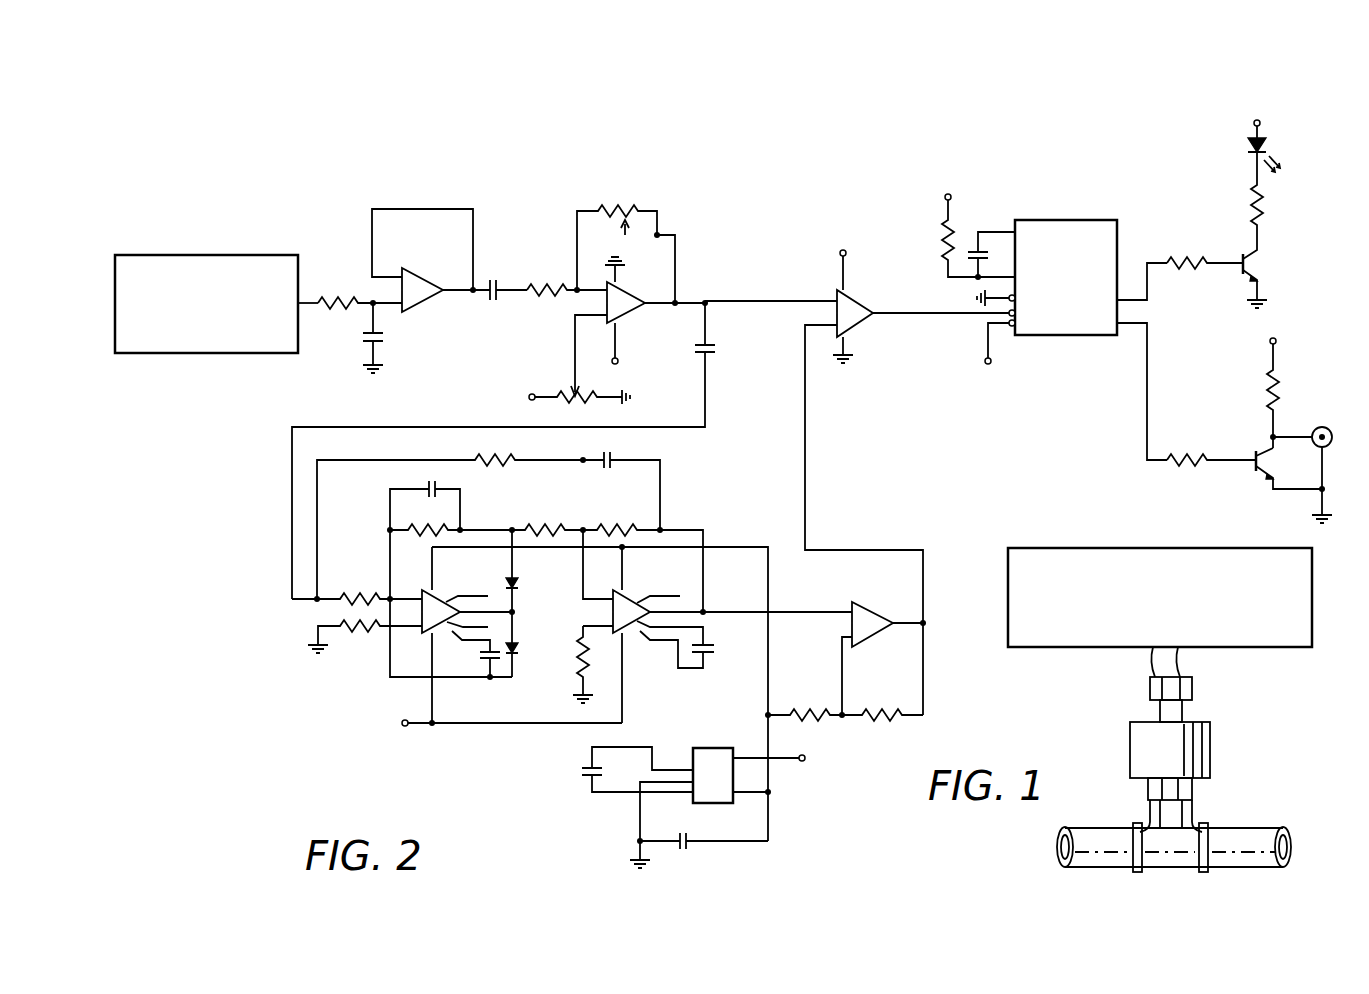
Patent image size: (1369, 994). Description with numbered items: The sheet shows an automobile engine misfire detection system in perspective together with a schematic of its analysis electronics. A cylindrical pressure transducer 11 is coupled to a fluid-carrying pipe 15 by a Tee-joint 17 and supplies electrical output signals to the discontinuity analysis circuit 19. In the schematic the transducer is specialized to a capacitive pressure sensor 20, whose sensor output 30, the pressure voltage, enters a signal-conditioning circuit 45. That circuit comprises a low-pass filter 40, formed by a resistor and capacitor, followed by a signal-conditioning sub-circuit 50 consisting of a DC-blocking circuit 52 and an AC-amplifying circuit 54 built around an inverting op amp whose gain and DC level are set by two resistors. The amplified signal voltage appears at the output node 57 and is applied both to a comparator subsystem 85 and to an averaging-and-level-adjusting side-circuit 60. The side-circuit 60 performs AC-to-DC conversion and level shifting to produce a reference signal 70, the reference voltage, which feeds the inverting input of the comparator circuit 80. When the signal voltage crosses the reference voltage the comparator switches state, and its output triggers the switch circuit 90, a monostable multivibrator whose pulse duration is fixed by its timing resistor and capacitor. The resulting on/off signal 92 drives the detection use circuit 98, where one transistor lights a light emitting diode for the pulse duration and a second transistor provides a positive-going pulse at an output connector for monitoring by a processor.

In FIG. 1, the pressure transducer 11 is at (1212, 757).
In FIG. 1, the fluid-carrying pipe 15 is at (1286, 840).
In FIG. 1, the Tee-joint 17 is at (1196, 810).
In FIG. 1, the discontinuity analysis circuit 19 is at (1160, 547).
In FIG. 2, the capacitive pressure sensor 20 is at (125, 138).
In FIG. 2, the sensor output 30 is at (306, 305).
In FIG. 2, the low-pass filter 40 is at (313, 138).
In FIG. 2, the signal-conditioning circuit 45 is at (662, 91).
In FIG. 2, the signal-conditioning sub-circuit 50 is at (487, 138).
In FIG. 2, the DC-blocking circuit 52 is at (477, 185).
In FIG. 2, the AC-amplifying circuit 54 is at (573, 185).
In FIG. 2, the signal output node Vs 57 is at (688, 301).
In FIG. 2, the averaging-and-level-adjusting circuit 60 is at (262, 425).
In FIG. 2, the reference signal 70 is at (806, 471).
In FIG. 2, the comparator circuit 80 is at (813, 155).
In FIG. 2, the comparator subsystem 85 is at (1112, 98).
In FIG. 2, the switch circuit 90 is at (1107, 155).
In FIG. 2, the on/off signal 92 is at (1112, 155).
In FIG. 2, the detection use circuit 98 is at (1149, 87).